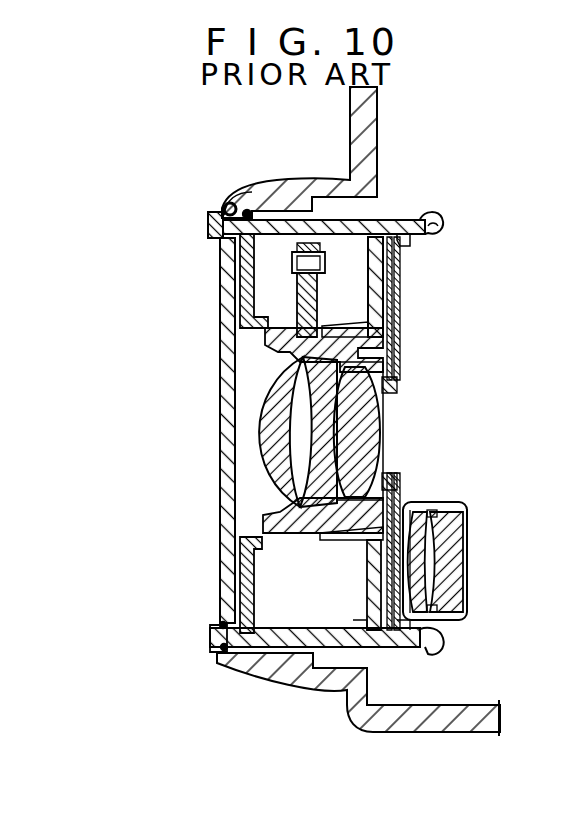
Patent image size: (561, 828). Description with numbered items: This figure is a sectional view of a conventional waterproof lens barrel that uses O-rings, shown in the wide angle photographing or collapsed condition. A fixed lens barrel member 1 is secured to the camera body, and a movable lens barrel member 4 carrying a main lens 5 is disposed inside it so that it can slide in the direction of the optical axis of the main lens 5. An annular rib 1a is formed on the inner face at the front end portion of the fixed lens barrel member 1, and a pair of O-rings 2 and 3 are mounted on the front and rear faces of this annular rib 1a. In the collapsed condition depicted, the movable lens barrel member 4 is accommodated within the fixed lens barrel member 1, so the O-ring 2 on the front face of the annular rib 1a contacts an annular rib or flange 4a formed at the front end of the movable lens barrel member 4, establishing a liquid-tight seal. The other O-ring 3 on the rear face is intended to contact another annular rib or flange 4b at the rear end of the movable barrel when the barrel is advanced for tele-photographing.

The fixed lens barrel member 1 is at (317, 182).
The annular rib 1a is at (230, 208).
The O-ring 2 is at (222, 195).
The O-ring 3 is at (242, 207).
The movable lens barrel member 4 is at (343, 230).
The annular rib or flange 4a is at (210, 222).
The annular rib or flange 4b is at (428, 215).
The main lens 5 is at (266, 395).